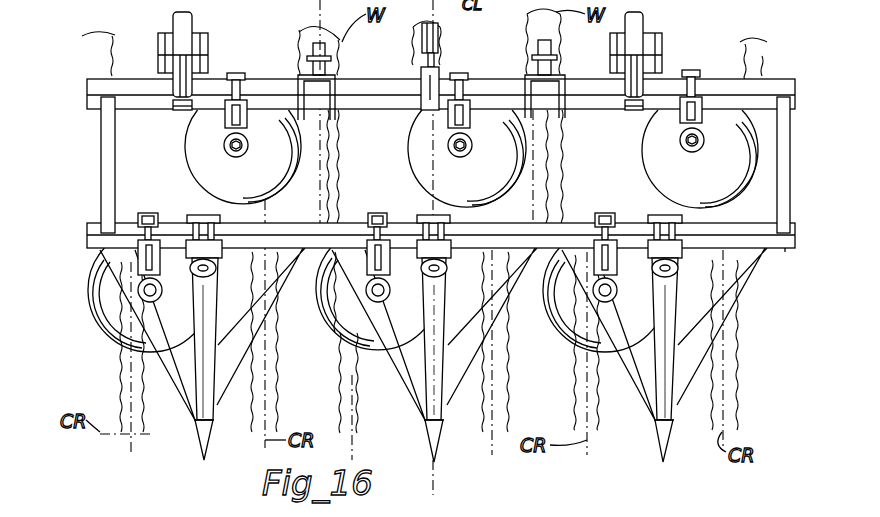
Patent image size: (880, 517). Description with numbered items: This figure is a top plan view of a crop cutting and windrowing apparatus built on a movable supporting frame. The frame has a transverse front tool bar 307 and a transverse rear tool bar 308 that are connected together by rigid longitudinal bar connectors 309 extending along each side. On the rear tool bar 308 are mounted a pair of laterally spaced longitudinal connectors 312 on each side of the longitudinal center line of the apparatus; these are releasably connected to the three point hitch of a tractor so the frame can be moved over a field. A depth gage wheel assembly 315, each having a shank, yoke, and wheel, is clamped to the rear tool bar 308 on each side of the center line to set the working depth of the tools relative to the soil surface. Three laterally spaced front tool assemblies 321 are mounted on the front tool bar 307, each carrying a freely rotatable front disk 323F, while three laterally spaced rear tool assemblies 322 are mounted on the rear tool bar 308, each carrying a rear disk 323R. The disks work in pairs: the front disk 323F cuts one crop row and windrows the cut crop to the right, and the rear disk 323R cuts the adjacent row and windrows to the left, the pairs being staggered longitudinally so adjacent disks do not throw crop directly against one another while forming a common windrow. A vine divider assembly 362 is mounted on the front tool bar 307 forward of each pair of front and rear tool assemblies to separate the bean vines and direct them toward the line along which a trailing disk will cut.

The front tool bar 307 is at (794, 249).
The rear tool bar 308 is at (766, 78).
The longitudinal bar connectors 309 is at (103, 156).
The longitudinal connectors 312 is at (338, 108).
The depth gage wheel assembly 315 is at (188, 27).
The front tool assemblies 321 is at (143, 292).
The rear tool assemblies 322 is at (226, 144).
The rear disk 323R is at (208, 176).
The front disk 323F is at (130, 328).
The vine divider assembly 362 is at (193, 438).